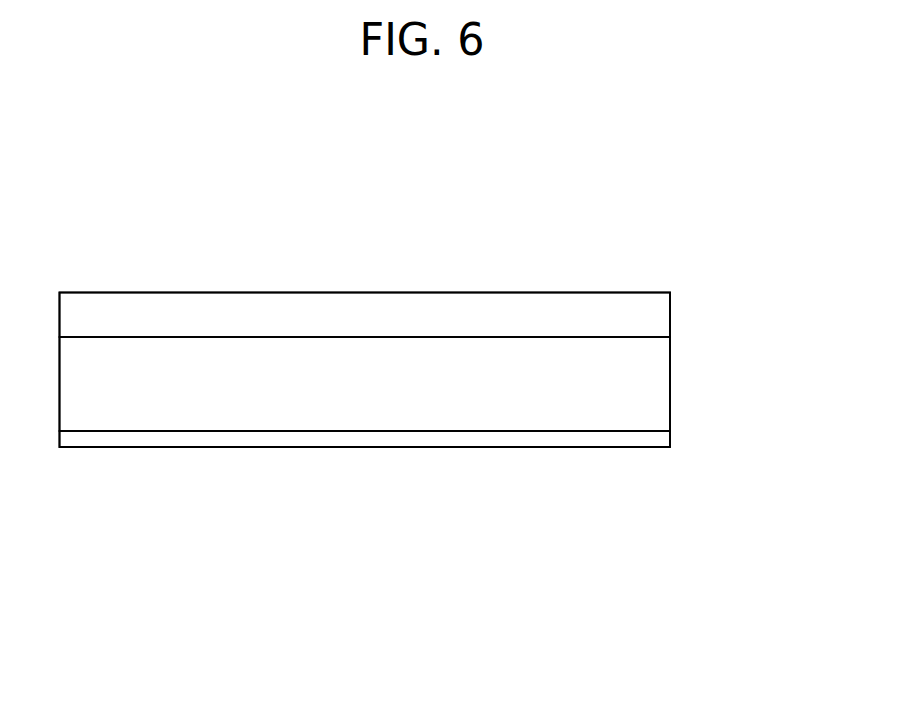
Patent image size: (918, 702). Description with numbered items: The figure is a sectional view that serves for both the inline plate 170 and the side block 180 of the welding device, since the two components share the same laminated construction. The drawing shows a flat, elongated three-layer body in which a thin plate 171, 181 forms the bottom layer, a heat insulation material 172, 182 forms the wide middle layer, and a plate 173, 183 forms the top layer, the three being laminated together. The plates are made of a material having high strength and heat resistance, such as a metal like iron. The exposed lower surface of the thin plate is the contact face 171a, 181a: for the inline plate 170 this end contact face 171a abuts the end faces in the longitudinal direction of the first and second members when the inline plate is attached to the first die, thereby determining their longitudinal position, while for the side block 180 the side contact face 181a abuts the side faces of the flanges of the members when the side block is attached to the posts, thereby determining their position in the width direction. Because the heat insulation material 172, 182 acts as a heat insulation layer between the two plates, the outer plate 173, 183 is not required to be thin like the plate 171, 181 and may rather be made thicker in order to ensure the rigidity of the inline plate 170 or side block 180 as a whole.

The inline plate 170 is at (449, 349).
The side block 180 is at (449, 349).
The plate 171 is at (449, 481).
The plate 181 is at (670, 442).
The end contact face 171a is at (365, 494).
The side contact face 181a is at (565, 447).
The heat insulation material 172 is at (449, 384).
The heat insulation material 182 is at (670, 377).
The plate 173 is at (449, 315).
The plate 183 is at (670, 315).